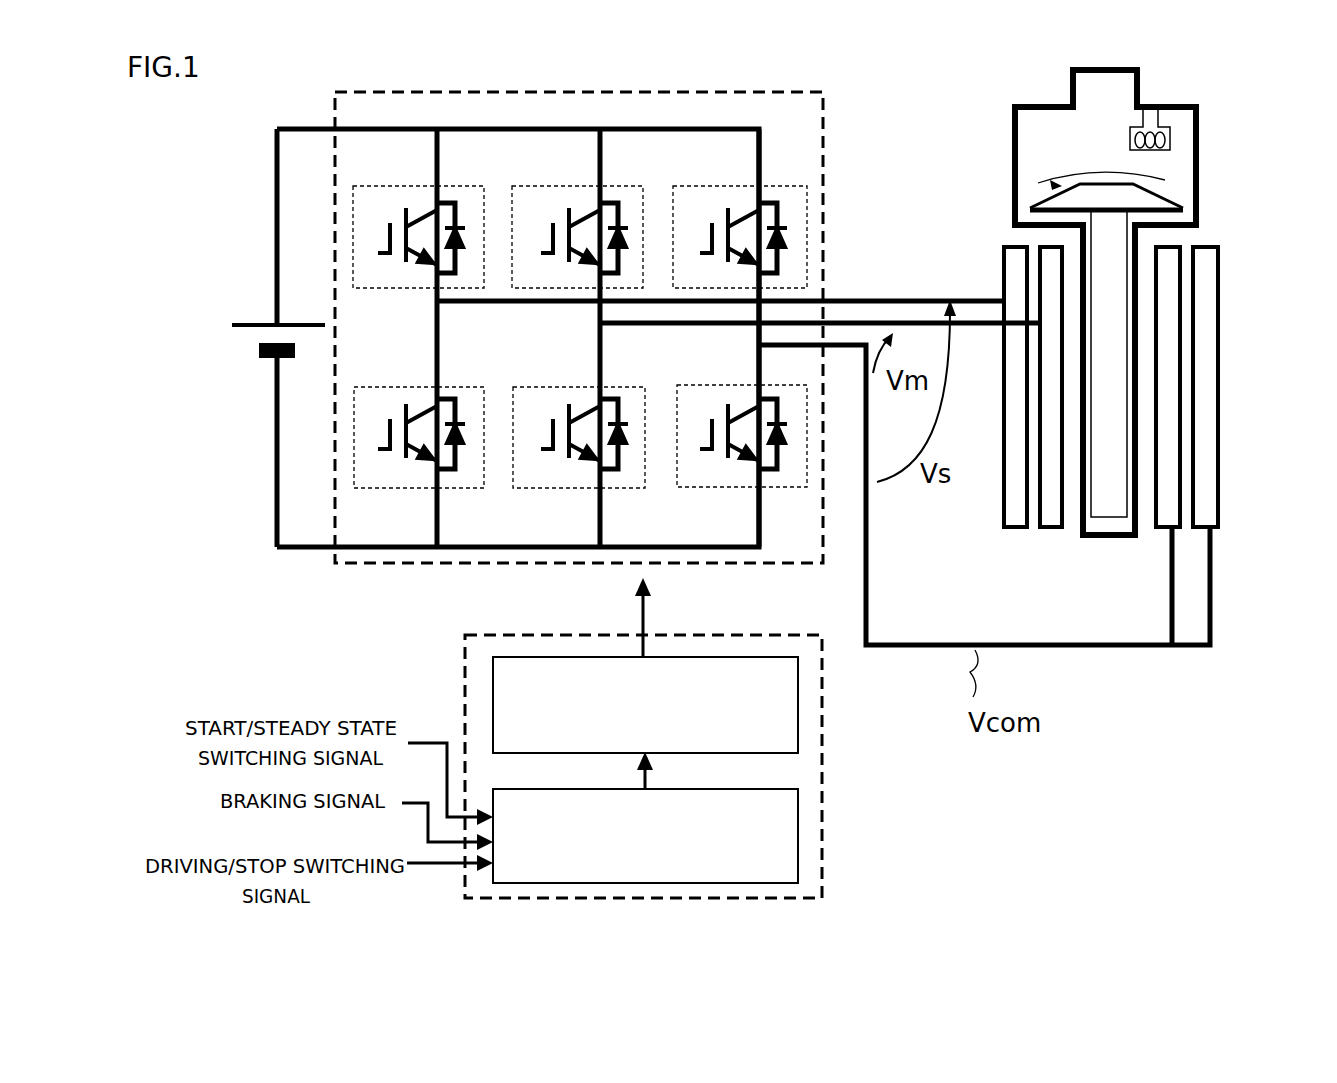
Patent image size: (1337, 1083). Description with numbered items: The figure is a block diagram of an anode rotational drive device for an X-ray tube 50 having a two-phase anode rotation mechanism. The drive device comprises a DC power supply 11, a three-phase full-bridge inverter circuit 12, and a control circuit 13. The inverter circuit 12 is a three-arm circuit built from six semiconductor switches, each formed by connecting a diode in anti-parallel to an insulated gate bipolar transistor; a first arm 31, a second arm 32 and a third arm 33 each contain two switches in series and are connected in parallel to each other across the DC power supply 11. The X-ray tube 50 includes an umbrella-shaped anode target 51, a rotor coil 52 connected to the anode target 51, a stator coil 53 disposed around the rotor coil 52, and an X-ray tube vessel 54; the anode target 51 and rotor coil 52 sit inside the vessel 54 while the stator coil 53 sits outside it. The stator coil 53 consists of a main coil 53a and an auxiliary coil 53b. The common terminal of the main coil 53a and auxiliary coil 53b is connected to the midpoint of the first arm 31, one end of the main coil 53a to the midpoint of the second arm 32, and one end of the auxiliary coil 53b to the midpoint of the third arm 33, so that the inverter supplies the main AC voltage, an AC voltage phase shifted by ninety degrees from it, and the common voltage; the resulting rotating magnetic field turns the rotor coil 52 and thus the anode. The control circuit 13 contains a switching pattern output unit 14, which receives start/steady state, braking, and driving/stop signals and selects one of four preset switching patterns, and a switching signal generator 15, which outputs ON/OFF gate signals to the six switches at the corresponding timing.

The DC power supply 11 is at (257, 323).
The three-phase full-bridge inverter circuit 12 is at (743, 342).
The control circuit 13 is at (698, 737).
The switching pattern output unit 14 is at (798, 850).
The switching signal generator 15 is at (798, 729).
The first arm 31 is at (763, 157).
The second arm 32 is at (604, 153).
The third arm 33 is at (441, 153).
The X-ray tube 50 is at (1123, 345).
The anode target 51 is at (1147, 197).
The rotor coil 52 is at (1110, 500).
The stator coil 53 is at (1141, 443).
The main coil 53a is at (1052, 527).
The auxiliary coil 53b is at (1017, 527).
The X-ray tube vessel 54 is at (1012, 147).